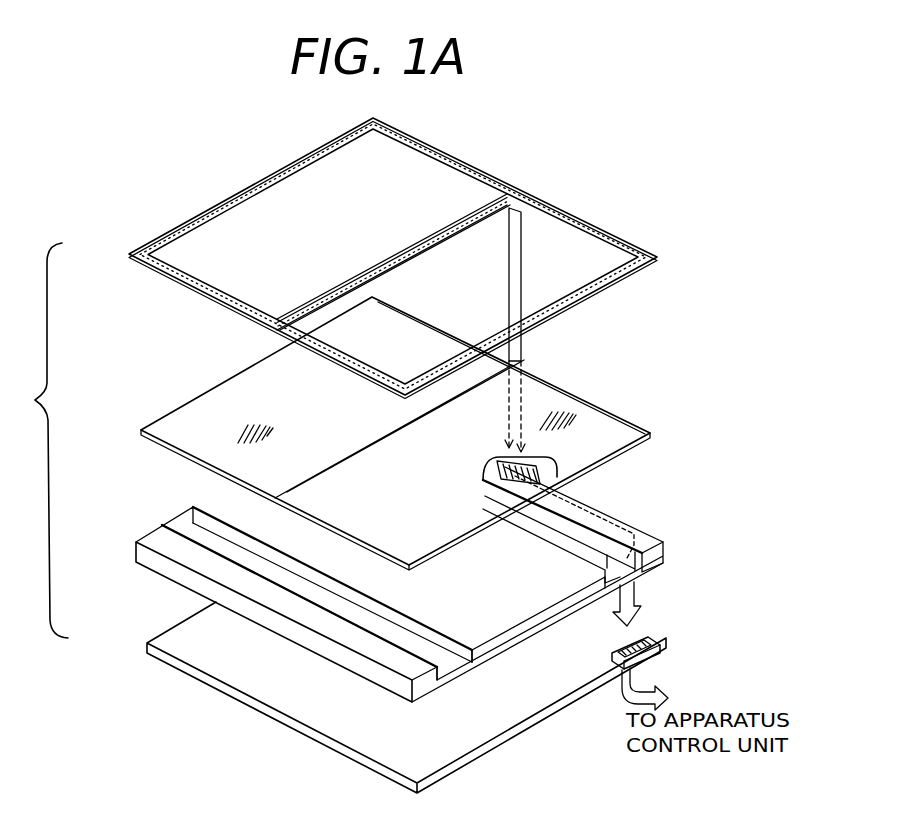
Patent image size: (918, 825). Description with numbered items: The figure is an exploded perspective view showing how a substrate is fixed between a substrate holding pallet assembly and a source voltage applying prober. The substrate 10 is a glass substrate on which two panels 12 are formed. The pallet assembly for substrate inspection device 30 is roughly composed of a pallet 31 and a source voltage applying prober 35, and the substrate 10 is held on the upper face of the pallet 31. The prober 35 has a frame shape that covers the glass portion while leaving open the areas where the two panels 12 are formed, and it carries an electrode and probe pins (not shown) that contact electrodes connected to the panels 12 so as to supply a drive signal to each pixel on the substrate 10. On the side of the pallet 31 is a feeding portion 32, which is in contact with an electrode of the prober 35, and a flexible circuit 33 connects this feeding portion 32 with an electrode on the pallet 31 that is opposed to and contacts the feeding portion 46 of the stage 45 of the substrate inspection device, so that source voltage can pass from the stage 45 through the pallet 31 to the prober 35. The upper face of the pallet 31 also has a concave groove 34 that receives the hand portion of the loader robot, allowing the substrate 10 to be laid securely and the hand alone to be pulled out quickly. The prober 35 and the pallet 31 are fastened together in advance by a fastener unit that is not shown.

The substrate 10 is at (543, 373).
The panels 12 is at (223, 402).
The pallet assembly for substrate inspection device 30 is at (37, 440).
The pallet 31 is at (148, 534).
The feeding portion 32 is at (548, 457).
The flexible circuit 33 is at (617, 512).
The concave groove 34 is at (620, 575).
The source voltage applying prober 35 is at (312, 152).
The stage 45 is at (300, 723).
The feeding portion 46 is at (643, 638).